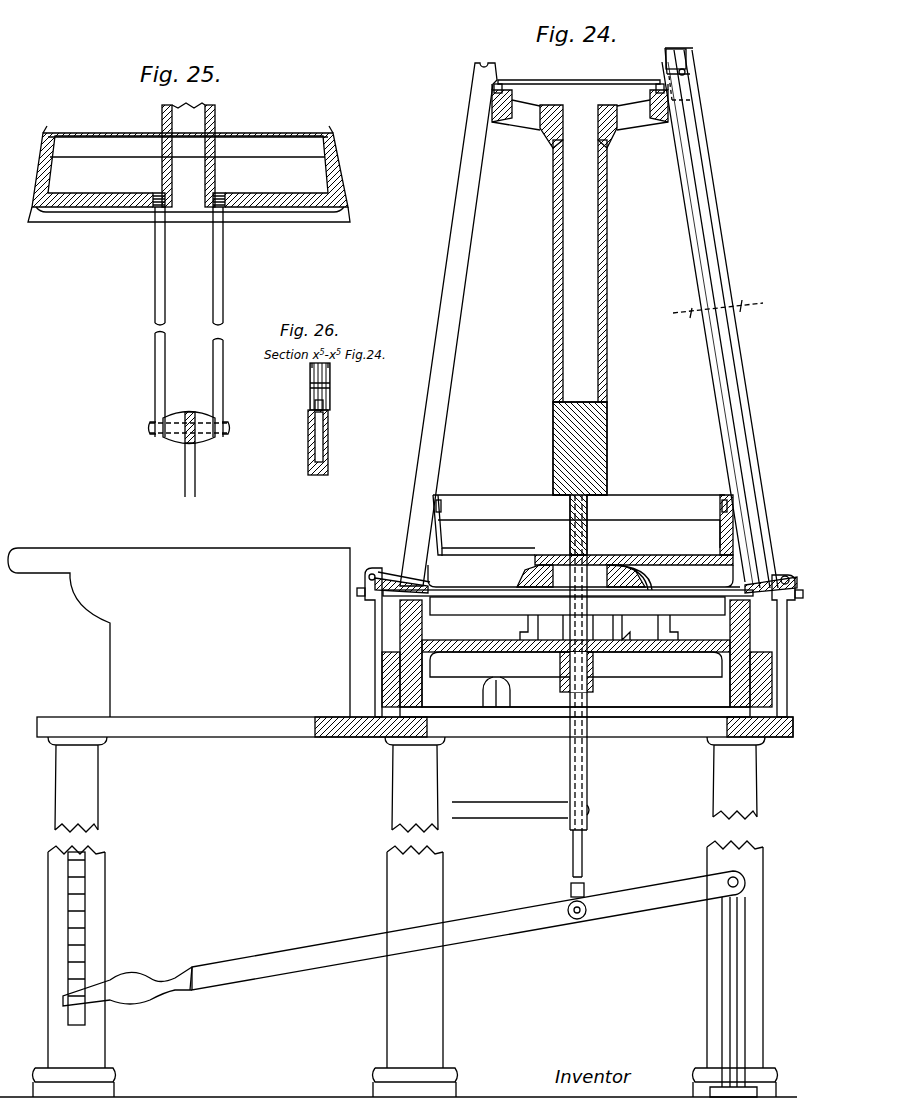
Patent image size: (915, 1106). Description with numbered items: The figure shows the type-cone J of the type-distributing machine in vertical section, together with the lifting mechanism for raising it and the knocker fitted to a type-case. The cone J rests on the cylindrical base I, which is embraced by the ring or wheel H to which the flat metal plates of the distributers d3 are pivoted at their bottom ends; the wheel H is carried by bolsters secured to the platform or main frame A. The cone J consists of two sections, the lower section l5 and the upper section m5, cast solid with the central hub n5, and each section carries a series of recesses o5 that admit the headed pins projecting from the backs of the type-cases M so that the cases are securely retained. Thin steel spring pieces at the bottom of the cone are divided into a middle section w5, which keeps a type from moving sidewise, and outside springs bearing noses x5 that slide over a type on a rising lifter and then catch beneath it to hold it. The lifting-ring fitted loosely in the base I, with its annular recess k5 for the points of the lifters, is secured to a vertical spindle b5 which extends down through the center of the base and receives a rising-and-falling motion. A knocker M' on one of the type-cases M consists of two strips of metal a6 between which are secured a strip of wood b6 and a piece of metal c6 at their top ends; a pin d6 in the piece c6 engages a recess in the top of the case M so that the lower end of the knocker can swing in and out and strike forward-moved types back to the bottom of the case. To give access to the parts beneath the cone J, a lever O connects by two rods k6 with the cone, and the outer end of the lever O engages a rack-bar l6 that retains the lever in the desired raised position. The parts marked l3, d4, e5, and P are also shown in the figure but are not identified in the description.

In FIG. 24, the type-case M is at (589, 318).
In FIG. 26, the type-case M is at (326, 442).
In FIG. 24, the knocker M' is at (710, 323).
In FIG. 26, the knocker M' is at (329, 386).
In FIG. 24, the nose x5 is at (713, 307).
In FIG. 24, the piece of metal c6 is at (676, 59).
In FIG. 24, the pin d6 is at (684, 70).
In FIG. 24, the type-cone J is at (512, 106).
In FIG. 25, the type-cone J is at (189, 177).
In FIG. 24, the upper section of cone m5 is at (590, 117).
In FIG. 24, the central hub n5 is at (587, 347).
In FIG. 24, the recesses o5 is at (581, 288).
In FIG. 25, the recesses o5 is at (187, 133).
In FIG. 24, the lower section of cone l5 is at (584, 542).
In FIG. 25, the lower section of cone l5 is at (180, 193).
In FIG. 24, the cylindrical base I is at (568, 613).
In FIG. 24, the annular recess k5 is at (475, 600).
In FIG. 24, the ring or wheel H is at (577, 658).
In FIG. 24, the bracket l3 is at (375, 642).
In FIG. 24, the foot pin d4 is at (402, 579).
In FIG. 24, the distributer d3 is at (786, 552).
In FIG. 24, the vertical spindle b5 is at (577, 662).
In FIG. 24, the guide e5 is at (520, 801).
In FIG. 24, the rods k6 is at (583, 874).
In FIG. 25, the rods k6 is at (194, 325).
In FIG. 24, the platform or main frame A is at (415, 726).
In FIG. 24, the frame P is at (179, 632).
In FIG. 24, the rack-bar l6 is at (72, 938).
In FIG. 24, the lever O is at (404, 938).
In FIG. 25, the lever O is at (196, 470).
In FIG. 25, the middle section w5 is at (188, 155).
In FIG. 26, the strips of metal a6 is at (318, 370).
In FIG. 26, the strip of wood b6 is at (315, 405).